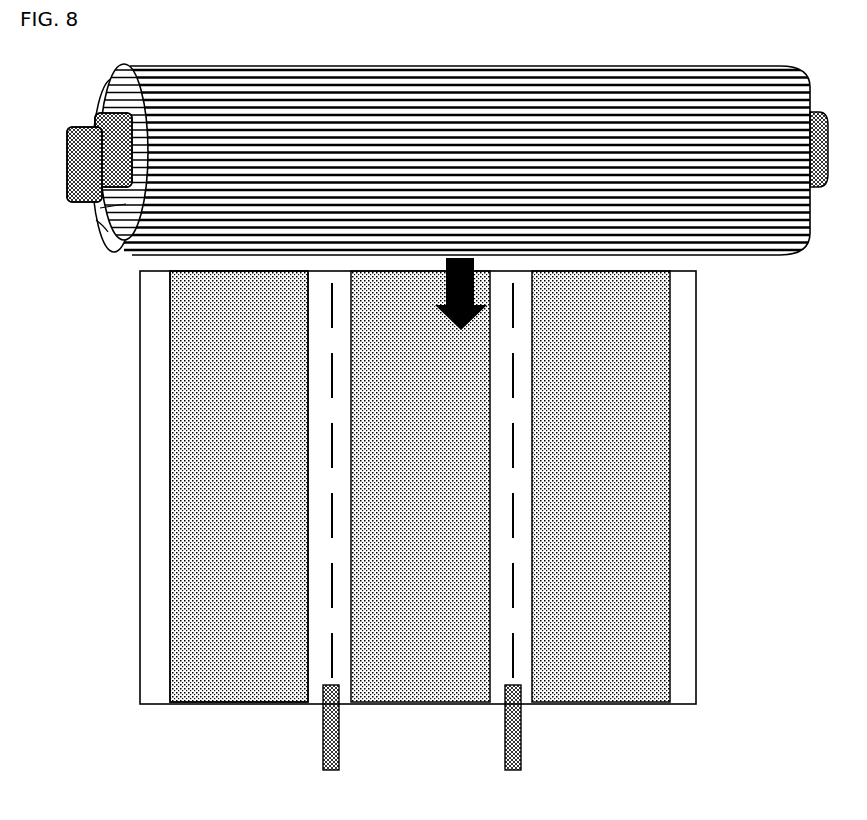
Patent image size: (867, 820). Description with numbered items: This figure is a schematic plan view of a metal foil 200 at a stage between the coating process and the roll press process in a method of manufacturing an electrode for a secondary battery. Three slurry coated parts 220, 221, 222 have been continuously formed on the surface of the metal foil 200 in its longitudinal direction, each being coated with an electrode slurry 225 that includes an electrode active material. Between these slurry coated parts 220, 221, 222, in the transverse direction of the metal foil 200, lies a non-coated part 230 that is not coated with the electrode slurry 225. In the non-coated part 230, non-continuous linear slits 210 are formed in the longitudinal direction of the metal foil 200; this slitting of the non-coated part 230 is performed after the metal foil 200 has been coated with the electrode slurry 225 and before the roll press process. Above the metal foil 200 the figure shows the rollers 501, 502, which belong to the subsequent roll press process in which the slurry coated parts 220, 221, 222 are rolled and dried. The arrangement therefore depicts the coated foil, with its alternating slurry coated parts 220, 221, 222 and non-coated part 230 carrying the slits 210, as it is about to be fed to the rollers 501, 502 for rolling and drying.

The metal foil 200 is at (138, 505).
The non-continuous linear slits 210 is at (332, 673).
The slurry coated part 220 is at (167, 417).
The slurry coated part 221 is at (349, 432).
The slurry coated part 222 is at (529, 430).
The electrode slurry 225 is at (178, 342).
The non-coated part 230 is at (340, 345).
The roller 501 is at (100, 225).
The roller 502 is at (103, 246).